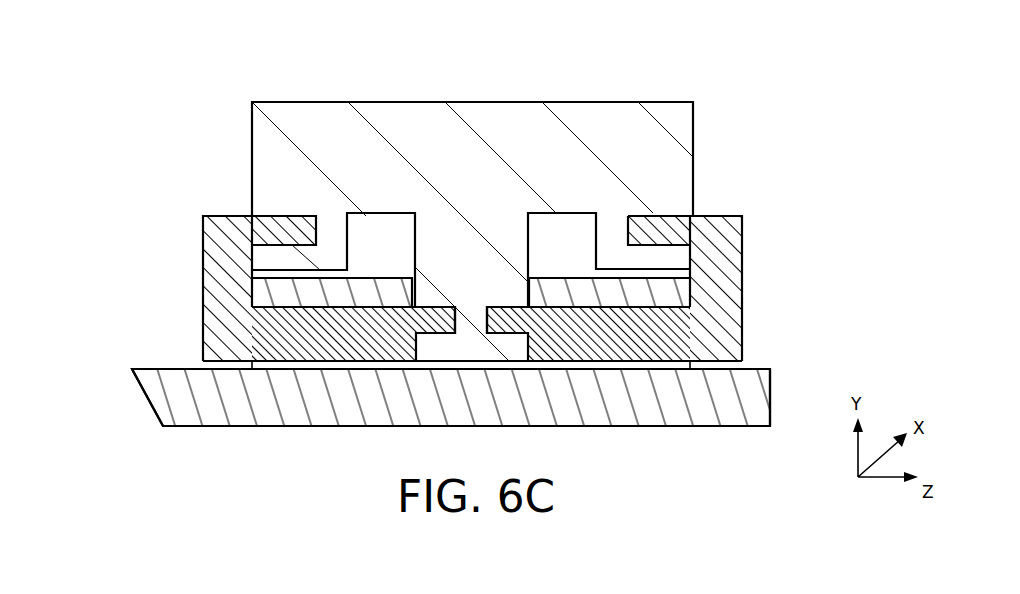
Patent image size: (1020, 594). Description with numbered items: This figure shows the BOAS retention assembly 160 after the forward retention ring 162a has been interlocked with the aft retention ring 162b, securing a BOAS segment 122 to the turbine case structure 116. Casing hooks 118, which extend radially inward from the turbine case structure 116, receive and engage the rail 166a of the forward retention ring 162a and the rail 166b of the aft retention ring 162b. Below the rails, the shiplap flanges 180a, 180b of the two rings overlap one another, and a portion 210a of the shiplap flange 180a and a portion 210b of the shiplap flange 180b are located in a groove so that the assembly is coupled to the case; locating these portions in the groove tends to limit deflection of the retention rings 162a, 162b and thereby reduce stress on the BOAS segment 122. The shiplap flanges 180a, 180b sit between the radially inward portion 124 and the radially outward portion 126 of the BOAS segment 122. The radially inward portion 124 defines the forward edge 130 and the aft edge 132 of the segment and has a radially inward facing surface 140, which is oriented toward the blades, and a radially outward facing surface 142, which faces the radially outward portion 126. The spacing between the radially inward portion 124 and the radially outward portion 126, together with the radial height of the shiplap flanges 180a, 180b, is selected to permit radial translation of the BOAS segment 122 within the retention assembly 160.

The turbine case structure 116 is at (607, 118).
The casing hook 118 is at (273, 262).
The BOAS segment 122 is at (768, 358).
The radially inward portion 124 is at (622, 403).
The radially outward portion 126 is at (372, 293).
The forward edge 130 is at (140, 388).
The aft edge 132 is at (770, 404).
The radially inward facing surface 140 is at (190, 427).
The radially outward facing surface 142 is at (163, 368).
The BOAS retention assembly 160 is at (181, 206).
The forward retention ring 162a is at (212, 270).
The aft retention ring 162b is at (722, 285).
The rail 166a is at (287, 235).
The rail 166b is at (662, 232).
The shiplap flange 180a is at (297, 317).
The shiplap flange 180b is at (560, 325).
The portion of shiplap flange 210a is at (432, 307).
The portion of shiplap flange 210b is at (497, 307).